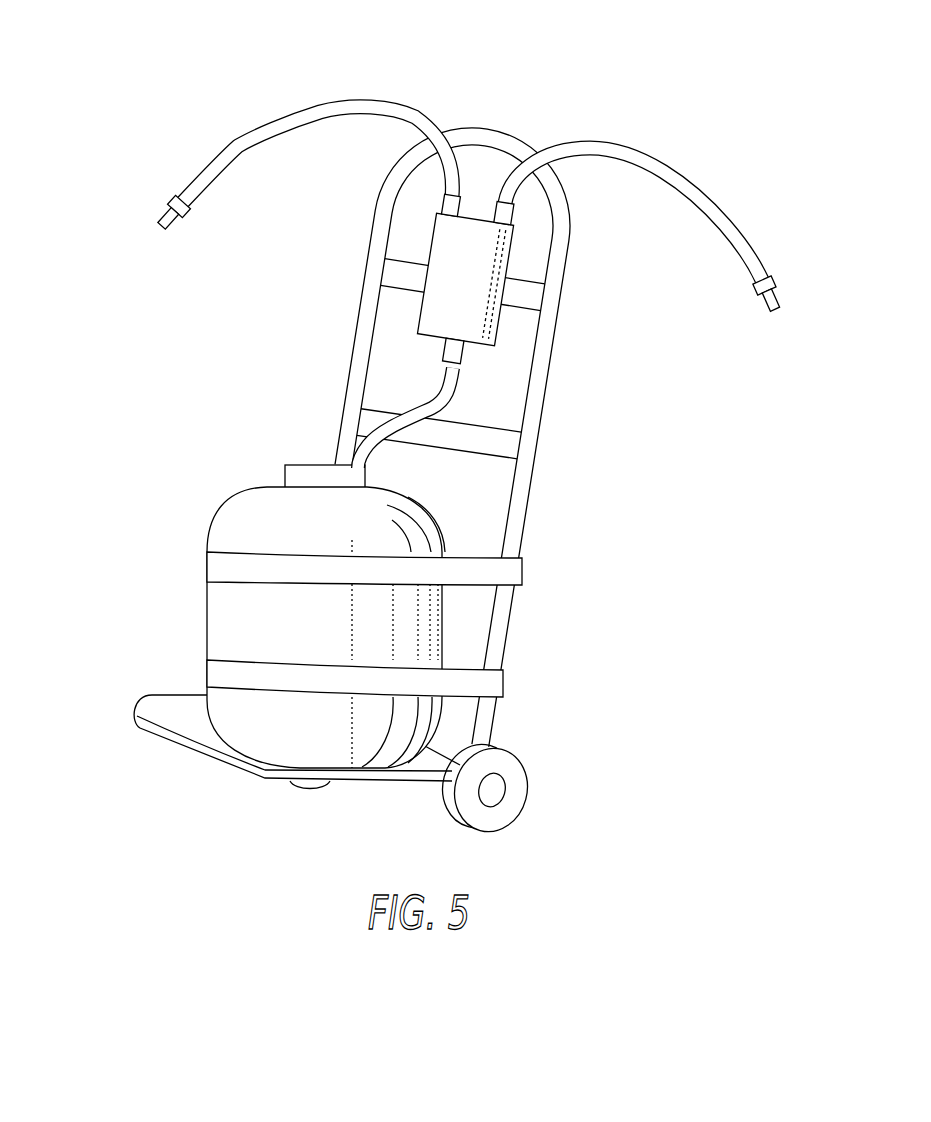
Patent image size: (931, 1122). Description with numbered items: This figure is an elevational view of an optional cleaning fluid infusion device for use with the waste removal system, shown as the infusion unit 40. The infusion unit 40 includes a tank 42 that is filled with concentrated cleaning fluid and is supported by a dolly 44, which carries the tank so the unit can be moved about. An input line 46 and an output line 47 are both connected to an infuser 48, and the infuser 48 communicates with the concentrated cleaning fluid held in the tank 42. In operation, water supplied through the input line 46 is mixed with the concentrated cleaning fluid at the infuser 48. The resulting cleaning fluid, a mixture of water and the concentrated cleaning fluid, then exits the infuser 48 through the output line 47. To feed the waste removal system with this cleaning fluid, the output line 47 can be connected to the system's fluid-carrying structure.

The infusion unit 40 is at (647, 83).
The tank 42 is at (243, 613).
The dolly 44 is at (488, 127).
The input line 46 is at (757, 263).
The output line 47 is at (191, 178).
The infuser 48 is at (478, 290).